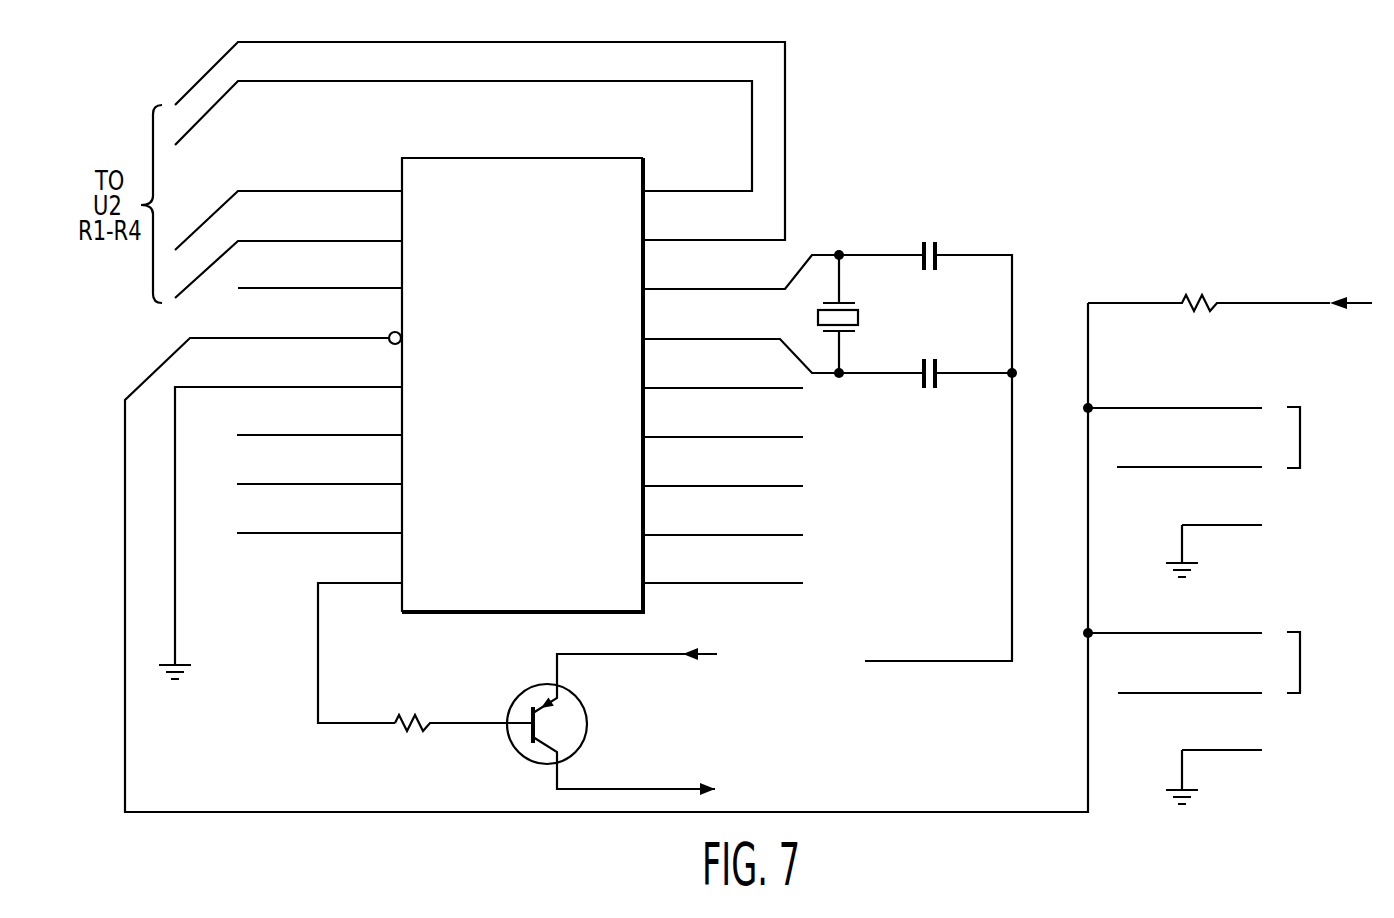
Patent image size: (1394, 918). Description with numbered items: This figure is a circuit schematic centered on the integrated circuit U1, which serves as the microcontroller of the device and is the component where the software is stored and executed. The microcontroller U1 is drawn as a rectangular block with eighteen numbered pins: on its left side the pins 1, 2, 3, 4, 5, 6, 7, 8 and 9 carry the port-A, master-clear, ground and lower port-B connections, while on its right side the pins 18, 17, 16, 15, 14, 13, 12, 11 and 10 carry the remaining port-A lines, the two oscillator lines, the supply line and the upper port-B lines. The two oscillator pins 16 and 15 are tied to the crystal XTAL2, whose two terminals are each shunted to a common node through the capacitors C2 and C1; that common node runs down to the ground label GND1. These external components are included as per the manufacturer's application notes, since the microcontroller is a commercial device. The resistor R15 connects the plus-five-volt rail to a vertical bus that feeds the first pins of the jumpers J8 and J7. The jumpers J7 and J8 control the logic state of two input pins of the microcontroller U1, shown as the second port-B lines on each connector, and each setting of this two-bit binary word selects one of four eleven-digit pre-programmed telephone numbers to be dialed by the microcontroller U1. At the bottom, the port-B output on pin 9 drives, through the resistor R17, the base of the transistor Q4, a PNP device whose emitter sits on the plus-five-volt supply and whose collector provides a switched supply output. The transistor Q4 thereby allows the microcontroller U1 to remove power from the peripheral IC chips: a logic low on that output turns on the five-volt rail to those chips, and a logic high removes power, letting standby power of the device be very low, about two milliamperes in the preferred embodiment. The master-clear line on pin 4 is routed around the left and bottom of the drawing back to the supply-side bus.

The integrated circuit U1 is at (522, 352).
The pin 1 RA2 1 is at (288, 204).
The pin 2 RA3 2 is at (288, 253).
The pin 3 RA4 3 is at (320, 271).
The pin 4 MCLR 4 is at (606, 557).
The pin 5 VSS 5 is at (280, 517).
The pin 6 RB0 6 is at (319, 418).
The pin 7 RB1 7 is at (319, 467).
The pin 8 RB2 8 is at (319, 516).
The pin 9 RB3 9 is at (360, 637).
The pin 10 RB4 10 is at (723, 566).
The pin 11 RB5 11 is at (723, 518).
The pin 12 RB6 12 is at (723, 469).
The pin 13 RB7 13 is at (723, 420).
The pin 14 VDD 14 is at (723, 371).
The pin 15 OSC2 15 is at (741, 340).
The pin 16 OSC1 16 is at (741, 272).
The pin 17 RA0 17 is at (480, 141).
The pin 18 RA1 18 is at (463, 136).
The 3.579 MHz crystal XTAL2 is at (896, 299).
The 22pF capacitor C1 is at (928, 404).
The 22pF capacitor C2 is at (925, 272).
The ground net GND1 is at (938, 517).
The 6.8K resistor R15 is at (1239, 307).
The 22K resistor R17 is at (463, 692).
The jumper J8 is at (1198, 462).
The jumper J7 is at (1198, 688).
The transistor Q4 is at (623, 712).